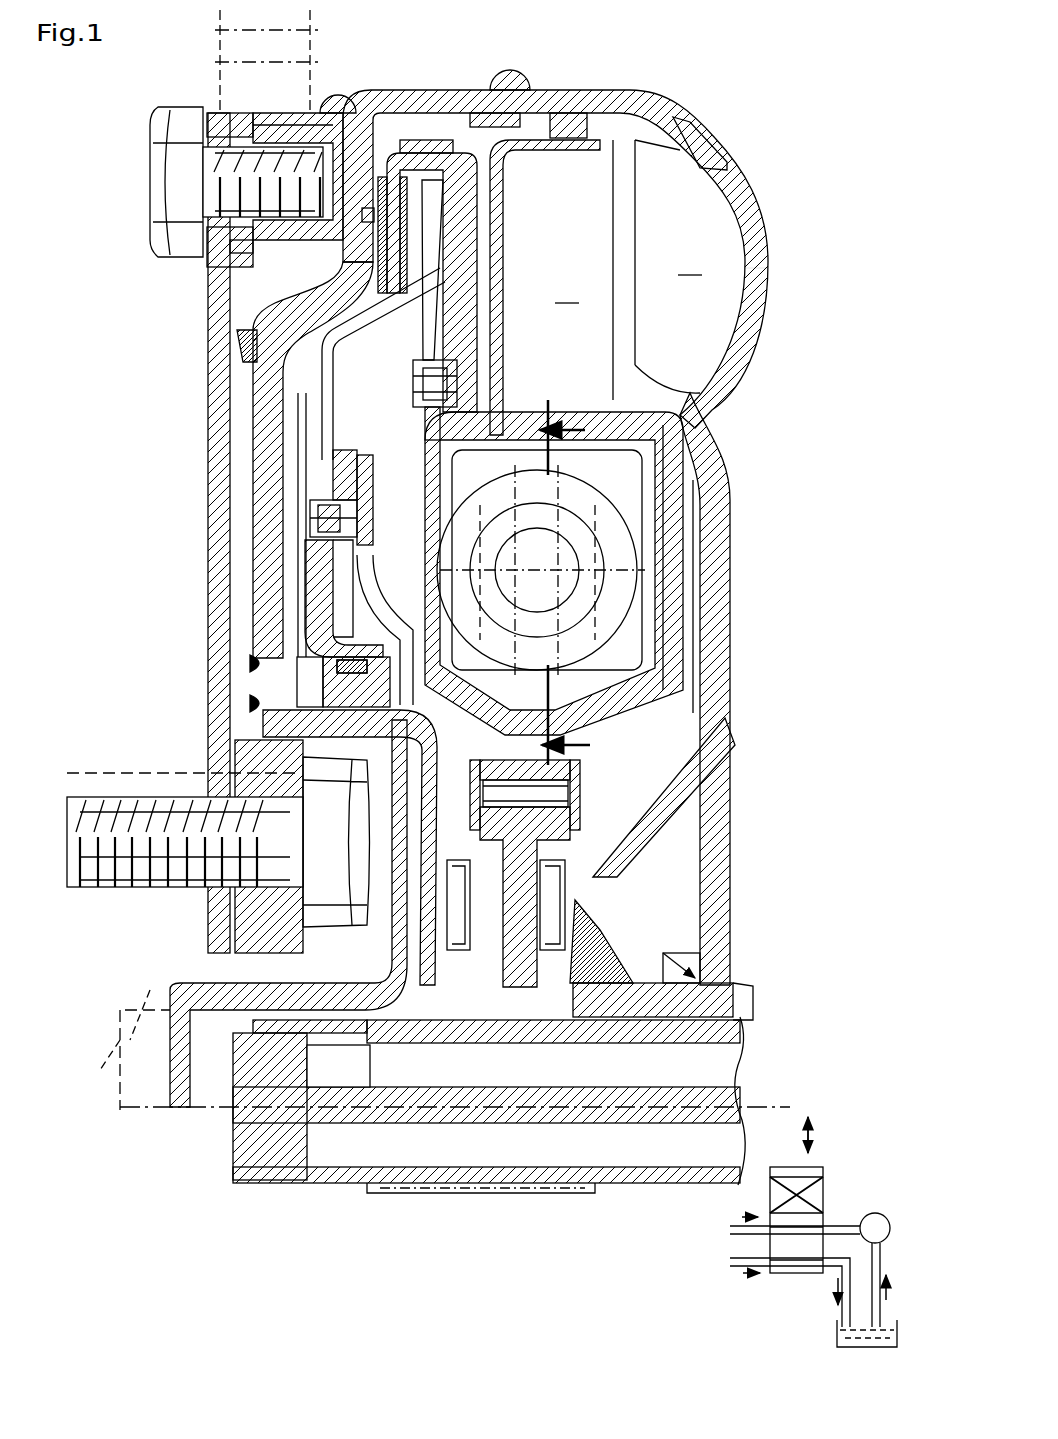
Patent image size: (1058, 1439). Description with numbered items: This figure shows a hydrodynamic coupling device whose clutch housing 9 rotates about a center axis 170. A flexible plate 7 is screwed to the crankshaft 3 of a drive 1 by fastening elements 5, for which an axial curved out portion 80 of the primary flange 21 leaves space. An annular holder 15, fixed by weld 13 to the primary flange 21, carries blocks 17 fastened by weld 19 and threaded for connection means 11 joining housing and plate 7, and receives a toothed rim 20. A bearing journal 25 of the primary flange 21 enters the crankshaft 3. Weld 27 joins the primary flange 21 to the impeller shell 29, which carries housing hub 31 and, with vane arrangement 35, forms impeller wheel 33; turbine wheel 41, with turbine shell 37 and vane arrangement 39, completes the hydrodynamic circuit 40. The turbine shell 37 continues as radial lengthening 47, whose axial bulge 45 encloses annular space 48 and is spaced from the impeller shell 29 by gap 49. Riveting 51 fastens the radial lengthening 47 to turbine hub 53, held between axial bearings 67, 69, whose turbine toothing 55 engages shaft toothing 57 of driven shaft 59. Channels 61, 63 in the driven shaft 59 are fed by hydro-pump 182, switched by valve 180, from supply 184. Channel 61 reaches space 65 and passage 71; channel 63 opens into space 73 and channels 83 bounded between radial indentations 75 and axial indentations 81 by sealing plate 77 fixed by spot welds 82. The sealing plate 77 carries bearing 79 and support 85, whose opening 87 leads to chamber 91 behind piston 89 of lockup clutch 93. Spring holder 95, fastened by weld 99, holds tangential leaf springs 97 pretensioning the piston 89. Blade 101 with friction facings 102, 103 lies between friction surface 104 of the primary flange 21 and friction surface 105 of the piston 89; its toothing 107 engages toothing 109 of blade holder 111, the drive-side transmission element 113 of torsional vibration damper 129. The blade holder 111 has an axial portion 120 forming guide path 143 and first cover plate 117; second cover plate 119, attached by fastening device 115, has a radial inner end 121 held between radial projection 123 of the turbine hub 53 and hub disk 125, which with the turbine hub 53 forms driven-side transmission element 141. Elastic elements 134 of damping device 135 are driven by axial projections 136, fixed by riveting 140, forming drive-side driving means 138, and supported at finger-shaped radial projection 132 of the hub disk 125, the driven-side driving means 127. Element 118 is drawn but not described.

The drive 1 is at (150, 960).
The crankshaft 3 is at (118, 1052).
The fastening elements 5 is at (330, 818).
The axially flexible plate 7 is at (225, 565).
The clutch housing 9 is at (748, 162).
The connection means 11 is at (163, 208).
The weld 13 is at (212, 365).
The annular holder 15 is at (238, 248).
The blocks 17 is at (318, 133).
The weld 19 is at (343, 120).
The toothed rim 20 is at (235, 95).
The primary flange 21 is at (262, 390).
The bearing journal 25 is at (172, 1110).
The weld 27 is at (513, 72).
The impeller shell 29 is at (765, 268).
The housing hub 31 is at (722, 992).
The impeller wheel 33 is at (728, 340).
The vane arrangement 35 is at (690, 262).
The turbine shell 37 is at (575, 155).
The vane arrangement 39 is at (541, 521).
The hydrodynamic circuit 40 is at (728, 372).
The turbine wheel 41 is at (592, 145).
The axial bulge 45 is at (660, 502).
The radial lengthening 47 is at (665, 590).
The annular space 48 is at (680, 517).
The gap 49 is at (660, 535).
The riveting 51 is at (565, 787).
The turbine hub 53 is at (580, 858).
The turbine toothing 55 is at (475, 1040).
The shaft toothing 57 is at (400, 1035).
The driven shaft 59 is at (612, 1170).
The channel 61 is at (345, 1035).
The channel 63 is at (253, 1155).
The space 65 is at (372, 1037).
The axial bearing 67 is at (430, 1040).
The axial bearing 69 is at (545, 930).
The passage 71 is at (495, 1040).
The space 73 is at (200, 1110).
The radial indentations 75 is at (207, 1008).
The annular sealing plate 77 is at (247, 1023).
The bearing 79 is at (233, 1130).
The axial curved out portion 80 is at (265, 790).
The axial indentations 81 is at (275, 893).
The spot welds 82 is at (232, 745).
The channels 83 is at (397, 1040).
The support 85 is at (340, 690).
The opening 87 is at (262, 645).
The piston 89 is at (320, 485).
The chamber 91 is at (296, 437).
The lockup clutch 93 is at (360, 228).
The spring holder 95 is at (315, 530).
The tangential leaf springs 97 is at (332, 460).
The weld 99 is at (325, 625).
The blade 101 is at (380, 245).
The friction facing 102 is at (372, 215).
The friction facing 103 is at (378, 262).
The friction surface 104 is at (375, 262).
The friction surface 105 is at (235, 325).
The toothing 107 is at (432, 128).
The toothing 109 is at (397, 143).
The blade holder 111 is at (400, 290).
The drive-side transmission element 113 is at (400, 322).
The fastening device 115 is at (427, 405).
The first cover plate 117 is at (660, 470).
The bearing 118 is at (418, 375).
The second cover plate 119 is at (427, 445).
The axial portion 120 is at (505, 388).
The radial inner end 121 is at (650, 688).
The radial projection 123 is at (240, 730).
The hub disk 125 is at (555, 820).
The driven-side driving means 127 is at (600, 763).
The torsional vibration damper 129 is at (806, 600).
The finger-shaped radial projection 132 is at (660, 663).
The elastic elements 134 is at (615, 620).
The damping device 135 is at (660, 425).
The axial projections 136 is at (585, 352).
The drive-side driving means 138 is at (720, 448).
The riveting 140 is at (655, 557).
The driven-side transmission element 141 is at (505, 912).
The guide path 143 is at (520, 358).
The center axis 170 is at (788, 1100).
The valve 180 is at (790, 1278).
The hydro-pump 182 is at (877, 1213).
The supply 184 is at (835, 1337).